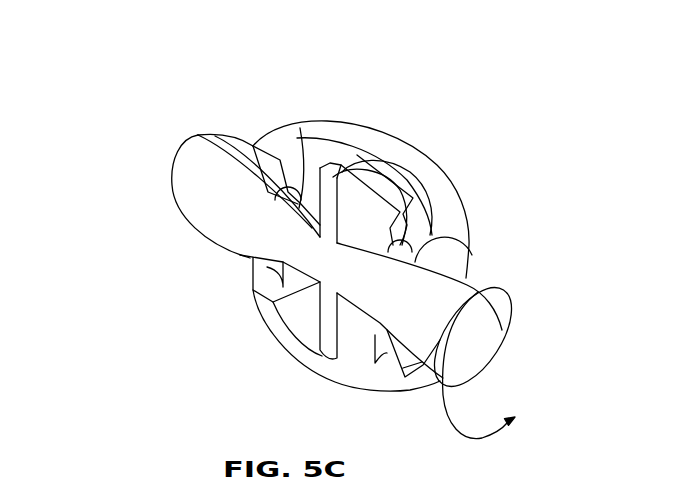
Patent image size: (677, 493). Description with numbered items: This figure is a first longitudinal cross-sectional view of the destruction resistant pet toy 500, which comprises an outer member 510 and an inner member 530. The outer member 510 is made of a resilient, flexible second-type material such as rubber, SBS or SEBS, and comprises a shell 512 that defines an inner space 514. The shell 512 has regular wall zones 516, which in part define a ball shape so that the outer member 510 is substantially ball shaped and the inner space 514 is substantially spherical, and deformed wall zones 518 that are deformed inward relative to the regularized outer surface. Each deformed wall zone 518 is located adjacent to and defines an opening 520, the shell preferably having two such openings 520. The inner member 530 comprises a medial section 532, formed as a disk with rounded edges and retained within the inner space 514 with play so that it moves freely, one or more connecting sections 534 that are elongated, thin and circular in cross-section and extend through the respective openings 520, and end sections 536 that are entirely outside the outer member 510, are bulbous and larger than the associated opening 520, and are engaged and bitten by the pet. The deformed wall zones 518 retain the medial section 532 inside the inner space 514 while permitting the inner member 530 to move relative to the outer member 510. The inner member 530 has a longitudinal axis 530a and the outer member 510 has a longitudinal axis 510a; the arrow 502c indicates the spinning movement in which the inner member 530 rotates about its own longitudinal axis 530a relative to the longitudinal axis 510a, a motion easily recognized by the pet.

The destruction resistant pet toy 500 is at (542, 116).
The arrow 502c is at (508, 290).
The outer member 510 is at (386, 133).
The longitudinal axis of outer member 510a is at (130, 148).
The shell 512 is at (345, 135).
The inner space 514 is at (302, 317).
The regular wall zones 516 is at (325, 363).
The deformed wall zones 518 is at (267, 148).
The opening 520 is at (300, 135).
The inner member 530 is at (477, 292).
The longitudinal axis of inner member 530a is at (516, 365).
The medial section 532 is at (353, 217).
The connecting section 534 is at (387, 247).
The end section 536 is at (208, 217).